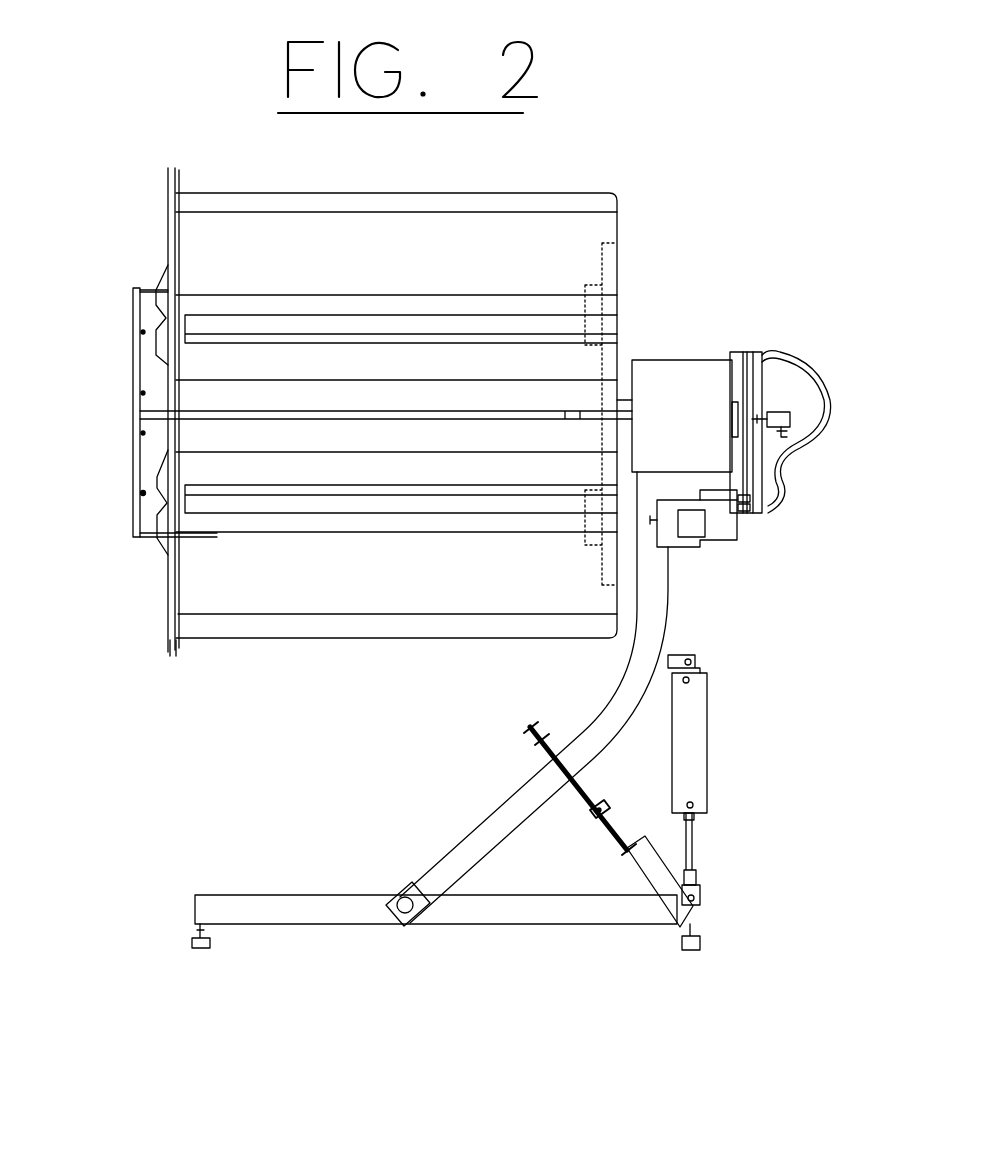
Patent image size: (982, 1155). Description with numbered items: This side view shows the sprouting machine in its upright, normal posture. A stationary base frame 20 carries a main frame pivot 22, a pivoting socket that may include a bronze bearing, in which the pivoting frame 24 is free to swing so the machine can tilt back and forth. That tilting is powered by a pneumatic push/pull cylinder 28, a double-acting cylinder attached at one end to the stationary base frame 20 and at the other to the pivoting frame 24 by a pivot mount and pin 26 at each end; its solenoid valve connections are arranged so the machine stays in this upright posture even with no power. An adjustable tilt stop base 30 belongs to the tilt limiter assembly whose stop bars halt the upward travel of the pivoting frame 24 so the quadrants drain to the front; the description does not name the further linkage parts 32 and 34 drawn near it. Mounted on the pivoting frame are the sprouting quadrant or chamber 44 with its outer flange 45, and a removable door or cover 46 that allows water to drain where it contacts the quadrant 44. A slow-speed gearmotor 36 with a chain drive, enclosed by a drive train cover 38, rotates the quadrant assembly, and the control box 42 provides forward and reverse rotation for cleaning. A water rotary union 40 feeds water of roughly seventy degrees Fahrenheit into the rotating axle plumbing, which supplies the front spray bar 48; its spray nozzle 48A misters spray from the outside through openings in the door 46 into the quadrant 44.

The stationary base frame 20 is at (582, 917).
The main frame pivot 22 is at (387, 907).
The pivoting frame 24 is at (490, 845).
The pneumatic cylinder's pivot mount and pin 26 is at (693, 668).
The pneumatic push/pull cylinder 28 is at (698, 780).
The adjustable tilt stop base 30 is at (640, 872).
The coupling 32 is at (602, 813).
The rod 34 is at (537, 747).
The gearmotor 36 is at (697, 530).
The drive train cover 38 is at (767, 452).
The water rotary union 40 is at (778, 410).
The control box 42 is at (655, 382).
The sprouting quadrant or chamber 44 is at (400, 205).
The quadrant's outer flange 45 is at (176, 654).
The removable door or cover 46 is at (163, 567).
The front spray bar 48 is at (133, 461).
The spray nozzle 48A is at (142, 495).